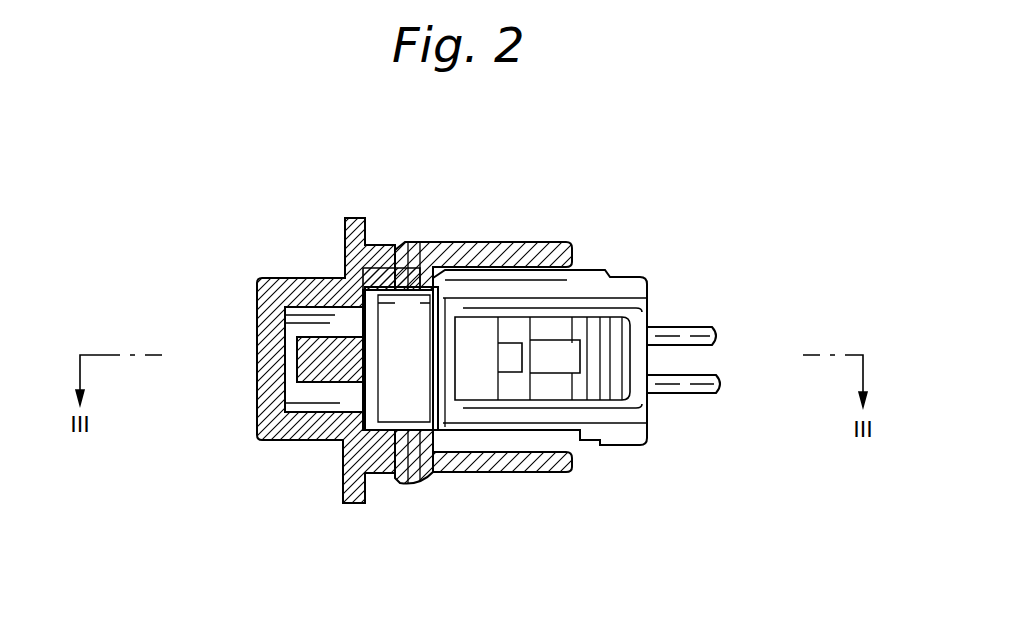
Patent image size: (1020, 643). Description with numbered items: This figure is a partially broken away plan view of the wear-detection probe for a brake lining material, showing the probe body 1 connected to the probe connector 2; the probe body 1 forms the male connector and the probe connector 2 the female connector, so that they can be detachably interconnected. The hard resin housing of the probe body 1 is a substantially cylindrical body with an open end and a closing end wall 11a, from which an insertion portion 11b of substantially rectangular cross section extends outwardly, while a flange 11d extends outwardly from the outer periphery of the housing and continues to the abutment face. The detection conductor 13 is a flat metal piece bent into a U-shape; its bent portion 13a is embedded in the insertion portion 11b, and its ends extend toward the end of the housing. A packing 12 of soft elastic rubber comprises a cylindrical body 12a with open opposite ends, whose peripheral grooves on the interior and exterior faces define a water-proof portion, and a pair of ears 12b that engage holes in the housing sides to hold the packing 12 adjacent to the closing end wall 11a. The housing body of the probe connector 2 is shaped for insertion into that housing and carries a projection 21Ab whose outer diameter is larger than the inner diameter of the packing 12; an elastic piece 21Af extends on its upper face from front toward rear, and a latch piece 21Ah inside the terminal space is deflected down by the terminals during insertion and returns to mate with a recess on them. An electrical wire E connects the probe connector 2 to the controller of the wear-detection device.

The probe body 1 is at (256, 441).
The closing end wall 11a is at (343, 463).
The insertion portion 11b is at (262, 278).
The flange 11d is at (366, 222).
The packing 12 is at (421, 244).
The cylindrical body 12a is at (394, 480).
The ears 12b is at (420, 491).
The detection conductor 13 is at (297, 420).
The bent portion 13a is at (290, 361).
The probe connector 2 is at (619, 270).
The projection 21Ab is at (362, 272).
The latch piece 21Ah is at (507, 350).
The elastic piece 21Af is at (557, 385).
The electrical wire E is at (690, 326).